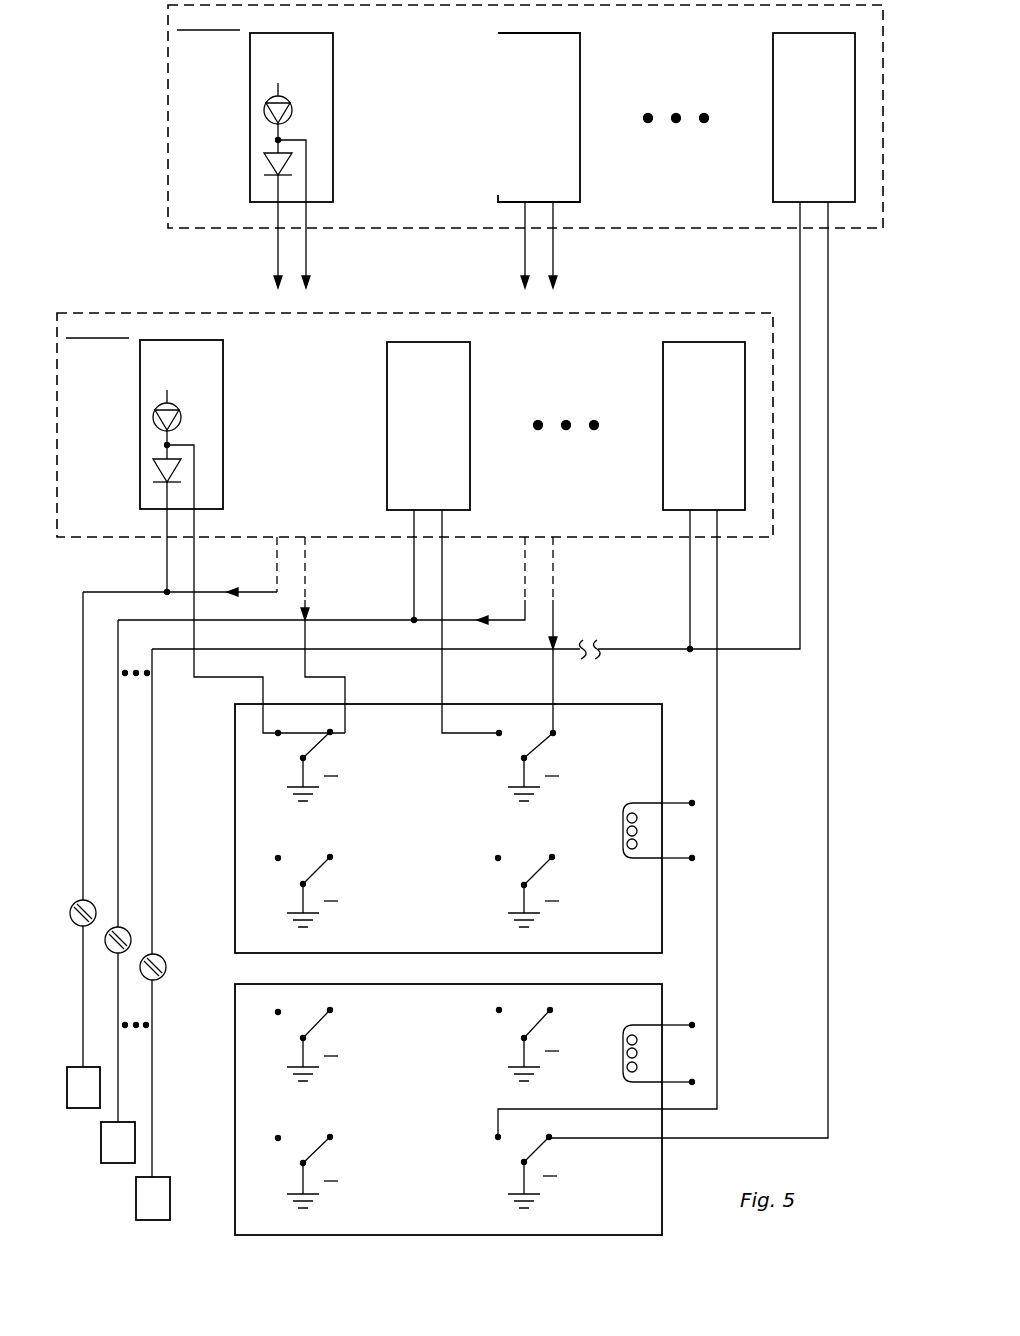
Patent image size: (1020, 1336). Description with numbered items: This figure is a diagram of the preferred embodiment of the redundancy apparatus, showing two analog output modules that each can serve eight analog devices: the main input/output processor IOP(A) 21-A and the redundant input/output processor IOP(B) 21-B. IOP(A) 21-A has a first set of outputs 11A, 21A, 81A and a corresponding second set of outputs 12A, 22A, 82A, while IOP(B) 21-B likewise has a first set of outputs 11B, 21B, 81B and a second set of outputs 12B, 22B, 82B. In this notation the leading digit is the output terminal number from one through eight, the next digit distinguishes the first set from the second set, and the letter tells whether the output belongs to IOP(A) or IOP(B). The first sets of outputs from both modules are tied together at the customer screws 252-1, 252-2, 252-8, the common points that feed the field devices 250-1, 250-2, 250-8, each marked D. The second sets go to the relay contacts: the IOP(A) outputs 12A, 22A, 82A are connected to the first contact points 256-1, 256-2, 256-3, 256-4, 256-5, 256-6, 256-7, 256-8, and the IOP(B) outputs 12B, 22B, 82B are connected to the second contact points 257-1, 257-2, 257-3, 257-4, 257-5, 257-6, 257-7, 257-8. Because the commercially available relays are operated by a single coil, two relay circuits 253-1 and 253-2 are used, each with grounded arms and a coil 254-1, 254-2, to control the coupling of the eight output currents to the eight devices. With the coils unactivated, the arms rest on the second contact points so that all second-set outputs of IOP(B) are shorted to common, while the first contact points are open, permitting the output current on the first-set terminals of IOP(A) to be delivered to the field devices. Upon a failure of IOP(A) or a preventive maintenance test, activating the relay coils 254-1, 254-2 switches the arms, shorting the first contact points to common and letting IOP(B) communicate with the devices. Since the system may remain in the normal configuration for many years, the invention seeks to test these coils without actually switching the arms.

The redundant input/output processor IOP(B) 21-B is at (168, 118).
The main input/output processor IOP(A) 21-A is at (160, 312).
The first output of IOP(B) 11B is at (182, 385).
The second output of IOP(B) 12B is at (311, 436).
The first output of IOP(B) 21B is at (323, 413).
The second output of IOP(B) 22B is at (543, 467).
The first output of IOP(B) 81B is at (476, 430).
The second output of IOP(B) 82B is at (688, 670).
The first output of IOP(A) 11A is at (155, 537).
The second output of IOP(A) 12A is at (256, 589).
The first output of IOP(A) 21A is at (401, 565).
The second output of IOP(A) 22A is at (458, 621).
The first output of IOP(A) 81A is at (678, 579).
The second output of IOP(A) 82A is at (607, 823).
The customer screw 252-1 is at (92, 903).
The customer screw 252-2 is at (127, 930).
The customer screw 252-8 is at (162, 957).
The field device 250-1 is at (100, 1097).
The field device 250-2 is at (101, 1160).
The field device 250-8 is at (150, 1220).
The relay circuit 253-1 is at (650, 735).
The relay circuit 253-2 is at (650, 1015).
The relay coil 254-1 is at (638, 858).
The relay coil 254-2 is at (635, 1082).
The first contact point 256-1 is at (286, 733).
The first contact point 256-2 is at (500, 735).
The first contact point 256-3 is at (278, 858).
The first contact point 256-4 is at (498, 860).
The first contact point 256-5 is at (278, 1012).
The first contact point 256-6 is at (499, 1012).
The first contact point 256-7 is at (278, 1138).
The first contact point 256-8 is at (498, 1140).
The second contact point 257-1 is at (318, 740).
The second contact point 257-2 is at (555, 740).
The second contact point 257-3 is at (332, 858).
The second contact point 257-4 is at (565, 843).
The second contact point 257-5 is at (332, 1012).
The second contact point 257-6 is at (550, 1010).
The second contact point 257-7 is at (332, 1138).
The second contact point 257-8 is at (552, 1140).